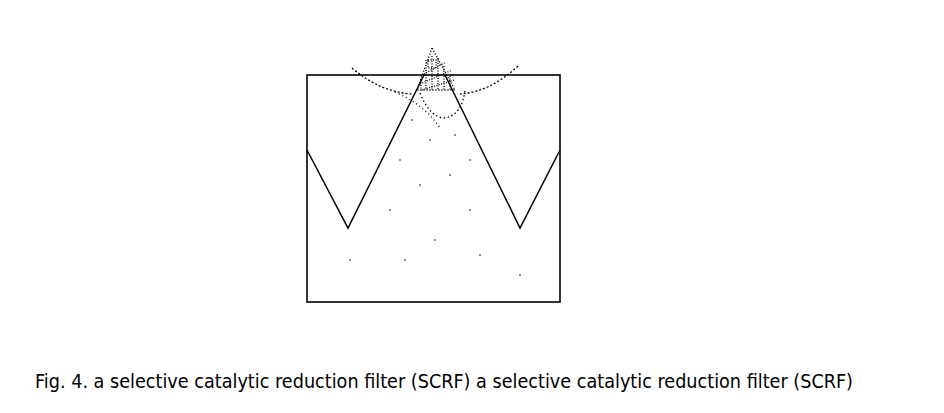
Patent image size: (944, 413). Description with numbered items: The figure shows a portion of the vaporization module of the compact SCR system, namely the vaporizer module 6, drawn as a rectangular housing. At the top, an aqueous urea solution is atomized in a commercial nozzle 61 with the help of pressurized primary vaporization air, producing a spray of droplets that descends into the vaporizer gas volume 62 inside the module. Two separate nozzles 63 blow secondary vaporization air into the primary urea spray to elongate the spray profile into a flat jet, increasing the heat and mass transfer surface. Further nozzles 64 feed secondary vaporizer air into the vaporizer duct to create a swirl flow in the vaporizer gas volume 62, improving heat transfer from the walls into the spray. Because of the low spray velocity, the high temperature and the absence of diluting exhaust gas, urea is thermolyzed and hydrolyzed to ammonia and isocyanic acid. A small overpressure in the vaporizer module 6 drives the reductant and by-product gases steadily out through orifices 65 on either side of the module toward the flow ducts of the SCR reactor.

The vaporizer module 6 is at (561, 92).
The commercial nozzle 61 is at (457, 66).
The vaporizer gas volume 62 is at (442, 225).
The nozzles 63 is at (423, 73).
The nozzles 64 is at (435, 71).
The orifices 65 is at (304, 150).